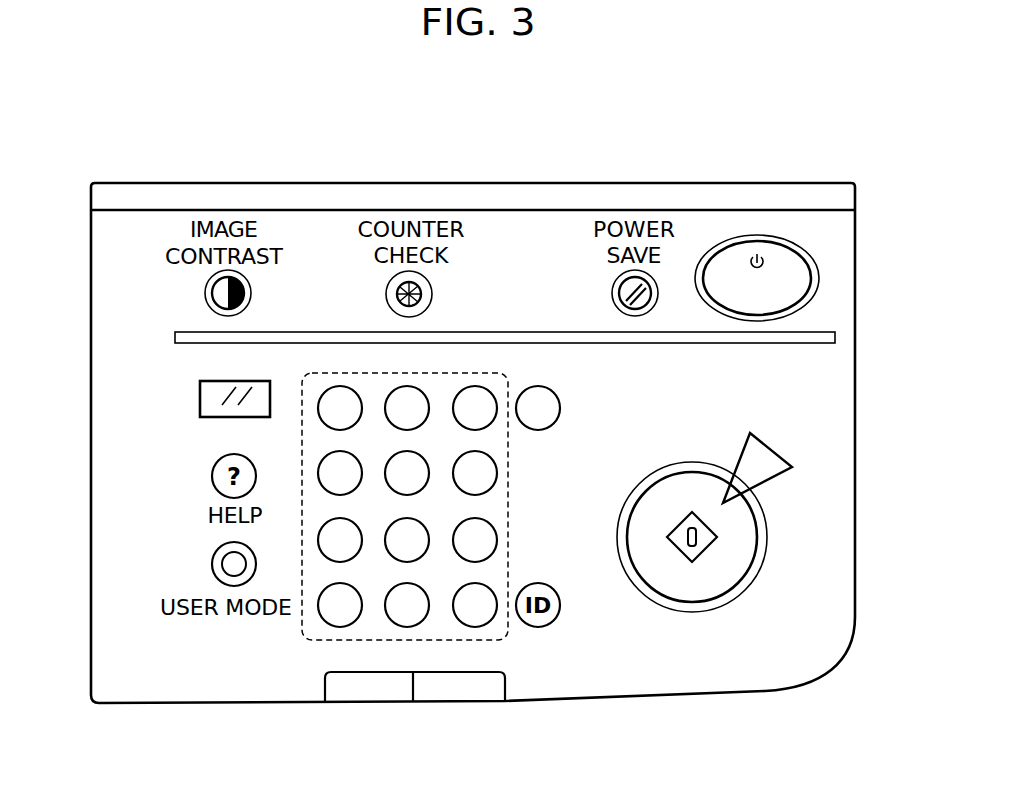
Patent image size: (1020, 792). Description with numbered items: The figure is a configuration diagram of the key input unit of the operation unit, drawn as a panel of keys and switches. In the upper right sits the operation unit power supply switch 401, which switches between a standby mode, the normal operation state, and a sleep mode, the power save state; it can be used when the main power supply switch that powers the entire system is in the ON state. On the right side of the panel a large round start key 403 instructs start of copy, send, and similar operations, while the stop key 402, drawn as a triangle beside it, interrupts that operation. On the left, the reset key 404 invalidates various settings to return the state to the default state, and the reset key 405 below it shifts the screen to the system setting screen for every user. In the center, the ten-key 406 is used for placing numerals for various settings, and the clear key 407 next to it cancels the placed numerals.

The operation unit power supply switch 401 is at (788, 262).
The stop key 402 is at (760, 462).
The start key 403 is at (727, 557).
The reset key 404 is at (210, 399).
The reset key 405 is at (212, 563).
The ten-key 406 is at (302, 628).
The clear key 407 is at (560, 408).